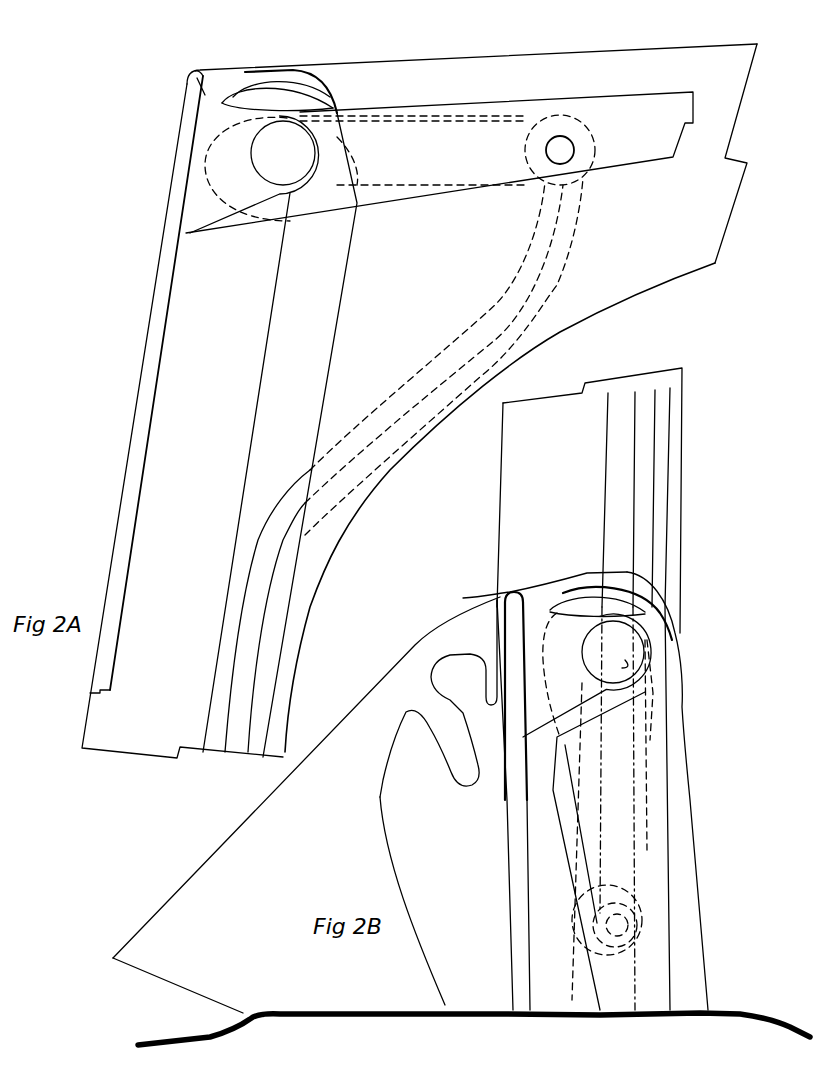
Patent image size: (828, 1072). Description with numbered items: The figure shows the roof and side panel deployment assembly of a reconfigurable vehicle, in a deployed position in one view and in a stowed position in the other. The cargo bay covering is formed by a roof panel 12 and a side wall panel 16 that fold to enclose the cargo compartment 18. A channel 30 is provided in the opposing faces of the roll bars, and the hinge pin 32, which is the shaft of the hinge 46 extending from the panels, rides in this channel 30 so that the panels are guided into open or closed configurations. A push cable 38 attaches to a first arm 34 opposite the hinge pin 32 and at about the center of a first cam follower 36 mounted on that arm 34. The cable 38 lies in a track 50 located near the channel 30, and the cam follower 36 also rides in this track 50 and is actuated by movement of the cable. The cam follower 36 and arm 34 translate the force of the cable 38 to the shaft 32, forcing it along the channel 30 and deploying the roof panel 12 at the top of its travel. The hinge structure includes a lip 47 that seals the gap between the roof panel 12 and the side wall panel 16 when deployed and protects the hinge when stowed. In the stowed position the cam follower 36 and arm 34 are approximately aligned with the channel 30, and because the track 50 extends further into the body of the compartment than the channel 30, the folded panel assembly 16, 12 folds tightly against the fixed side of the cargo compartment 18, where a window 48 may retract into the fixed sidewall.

In FIG. 2A, the roof panel 12 is at (637, 113).
In FIG. 2B, the roof panel 12 is at (660, 987).
In FIG. 2A, the side wall panel 16 is at (136, 426).
In FIG. 2B, the side wall panel 16 is at (518, 943).
In FIG. 2B, the cargo compartment 18 is at (333, 818).
In FIG. 2A, the channel 30 is at (280, 360).
In FIG. 2B, the channel 30 is at (660, 430).
In FIG. 2A, the hinge pin 32 is at (270, 156).
In FIG. 2B, the hinge pin 32 is at (652, 665).
In FIG. 2A, the first arm 34 is at (420, 163).
In FIG. 2B, the first arm 34 is at (587, 823).
In FIG. 2A, the first cam follower 36 is at (580, 147).
In FIG. 2B, the first cam follower 36 is at (632, 940).
In FIG. 2A, the cable 38 is at (420, 398).
In FIG. 2B, the cable 38 is at (633, 880).
In FIG. 2A, the hinge 46 is at (207, 137).
In FIG. 2B, the hinge 46 is at (463, 598).
In FIG. 2A, the lip 47 is at (248, 78).
In FIG. 2A, the window 48 is at (130, 483).
In FIG. 2B, the window 48 is at (517, 895).
In FIG. 2A, the track 50 is at (528, 318).
In FIG. 2B, the track 50 is at (660, 732).